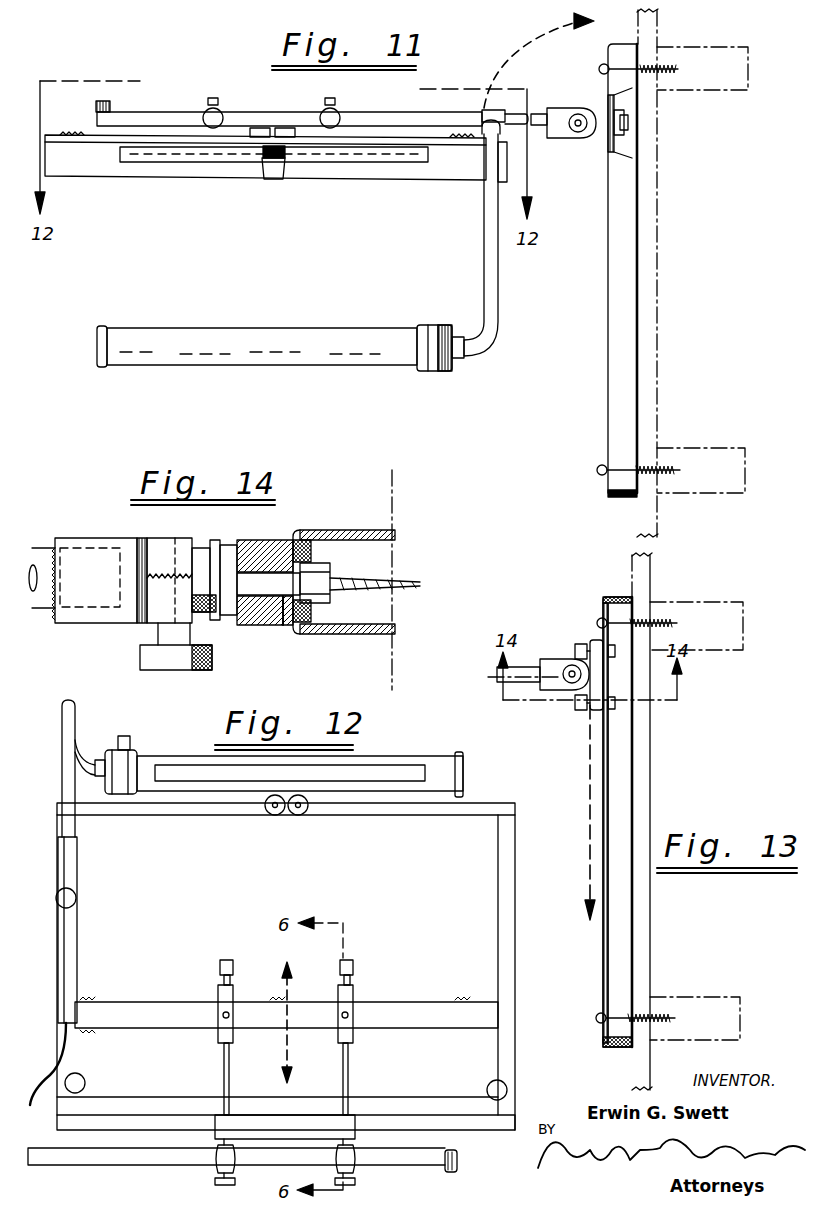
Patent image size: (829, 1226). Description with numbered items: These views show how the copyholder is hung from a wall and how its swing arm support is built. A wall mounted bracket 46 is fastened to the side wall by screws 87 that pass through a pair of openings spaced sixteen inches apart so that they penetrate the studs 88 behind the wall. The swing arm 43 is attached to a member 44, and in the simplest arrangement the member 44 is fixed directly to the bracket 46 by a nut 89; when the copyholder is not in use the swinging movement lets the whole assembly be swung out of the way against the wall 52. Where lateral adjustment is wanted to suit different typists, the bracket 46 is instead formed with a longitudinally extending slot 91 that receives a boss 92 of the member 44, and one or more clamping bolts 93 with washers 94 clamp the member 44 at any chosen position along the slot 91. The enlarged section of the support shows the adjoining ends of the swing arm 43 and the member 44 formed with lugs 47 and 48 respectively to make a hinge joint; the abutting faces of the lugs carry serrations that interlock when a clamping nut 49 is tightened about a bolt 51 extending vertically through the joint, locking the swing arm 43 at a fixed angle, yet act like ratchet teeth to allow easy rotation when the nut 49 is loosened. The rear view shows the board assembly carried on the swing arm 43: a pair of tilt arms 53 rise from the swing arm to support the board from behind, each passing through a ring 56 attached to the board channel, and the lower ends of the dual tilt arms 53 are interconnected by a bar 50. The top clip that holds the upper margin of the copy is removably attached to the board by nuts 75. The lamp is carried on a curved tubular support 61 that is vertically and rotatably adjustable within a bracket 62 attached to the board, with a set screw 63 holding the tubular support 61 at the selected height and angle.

In FIG. 14, the swing arm 43 is at (110, 538).
In FIG. 11, the member 44 is at (593, 130).
In FIG. 13, the member 44 is at (582, 660).
In FIG. 14, the member 44 is at (237, 540).
In FIG. 11, the wall mounted bracket 46 is at (609, 283).
In FIG. 13, the wall mounted bracket 46 is at (603, 606).
In FIG. 14, the wall mounted bracket 46 is at (312, 530).
In FIG. 14, the lug 47 is at (192, 545).
In FIG. 14, the lug 48 is at (165, 610).
In FIG. 14, the clamping nut 49 is at (205, 646).
In FIG. 12, the bar 50 is at (271, 1118).
In FIG. 14, the bolt 51 is at (170, 540).
In FIG. 11, the wall 52 is at (632, 520).
In FIG. 12, the tilt arm 53 is at (349, 1080).
In FIG. 12, the ring 56 is at (351, 992).
In FIG. 12, the curved tubular support 61 is at (65, 755).
In FIG. 12, the bracket 62 is at (74, 870).
In FIG. 12, the set screw 63 is at (76, 898).
In FIG. 11, the nut 75 is at (258, 128).
In FIG. 11, the screw 87 is at (648, 68).
In FIG. 13, the screw 87 is at (636, 820).
In FIG. 11, the stud 88 is at (703, 80).
In FIG. 13, the stud 88 is at (696, 821).
In FIG. 11, the nut 89 is at (624, 134).
In FIG. 13, the slot 91 is at (603, 972).
In FIG. 14, the slot 91 is at (283, 612).
In FIG. 14, the boss 92 is at (318, 564).
In FIG. 13, the clamping bolt 93 is at (580, 712).
In FIG. 14, the washer 94 is at (303, 622).